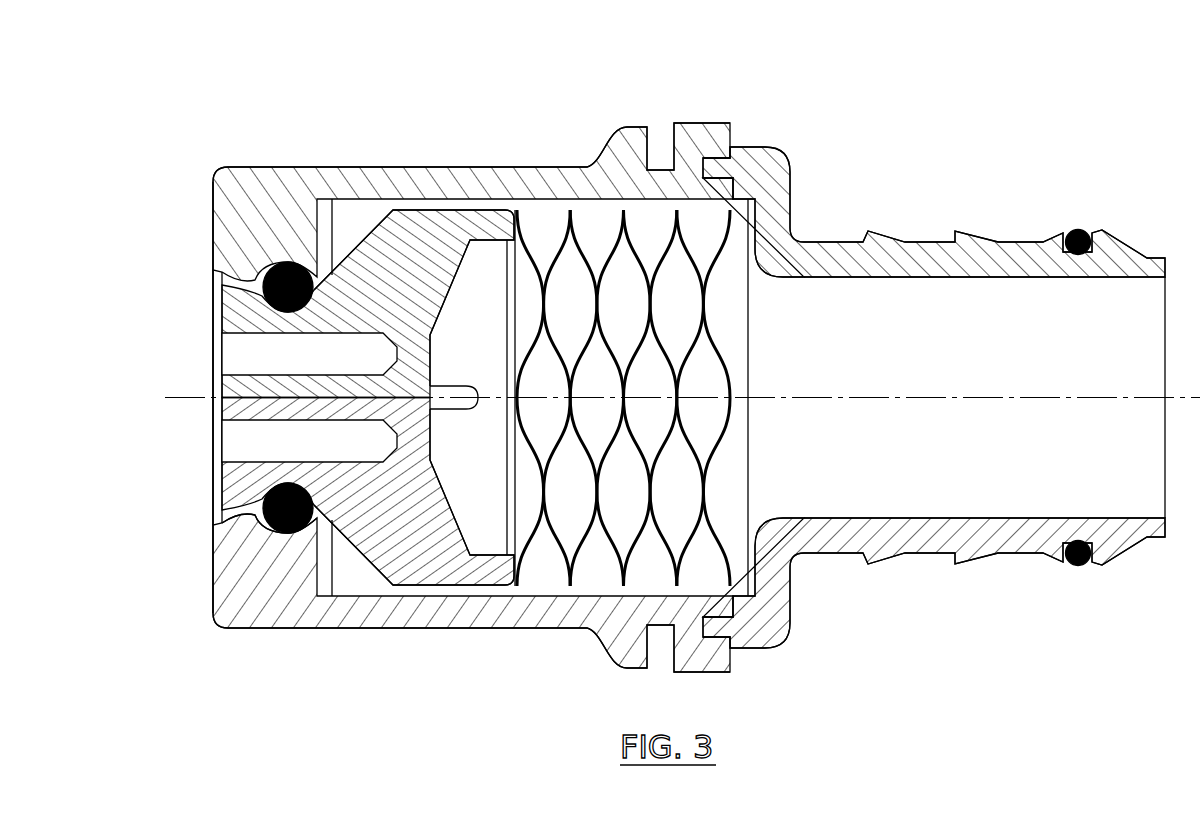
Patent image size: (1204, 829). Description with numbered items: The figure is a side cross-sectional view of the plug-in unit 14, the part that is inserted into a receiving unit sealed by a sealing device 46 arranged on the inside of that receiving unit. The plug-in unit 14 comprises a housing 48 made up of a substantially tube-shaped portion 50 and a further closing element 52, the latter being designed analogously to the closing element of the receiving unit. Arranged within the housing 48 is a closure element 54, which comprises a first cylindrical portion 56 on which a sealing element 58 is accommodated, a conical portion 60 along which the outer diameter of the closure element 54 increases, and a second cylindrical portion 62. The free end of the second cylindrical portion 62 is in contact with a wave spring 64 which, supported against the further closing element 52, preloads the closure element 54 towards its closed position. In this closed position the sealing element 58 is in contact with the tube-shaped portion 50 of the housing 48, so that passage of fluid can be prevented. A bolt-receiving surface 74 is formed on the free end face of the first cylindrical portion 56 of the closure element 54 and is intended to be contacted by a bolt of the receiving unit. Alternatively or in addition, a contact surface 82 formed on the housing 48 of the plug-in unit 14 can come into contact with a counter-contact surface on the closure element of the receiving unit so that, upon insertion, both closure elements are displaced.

The plug-in unit 14 is at (1006, 120).
The sealing device 46 is at (243, 183).
The housing 48 is at (757, 118).
The tube-shaped portion 50 is at (288, 167).
The further closing element 52 is at (888, 253).
The closure element 54 is at (430, 222).
The first cylindrical portion 56 is at (262, 522).
The sealing element 58 is at (288, 532).
The conical portion 60 is at (383, 540).
The second cylindrical portion 62 is at (449, 548).
The wave spring 64 is at (570, 210).
The bolt-receiving surface 74 is at (220, 420).
The contact surface 82 is at (212, 217).